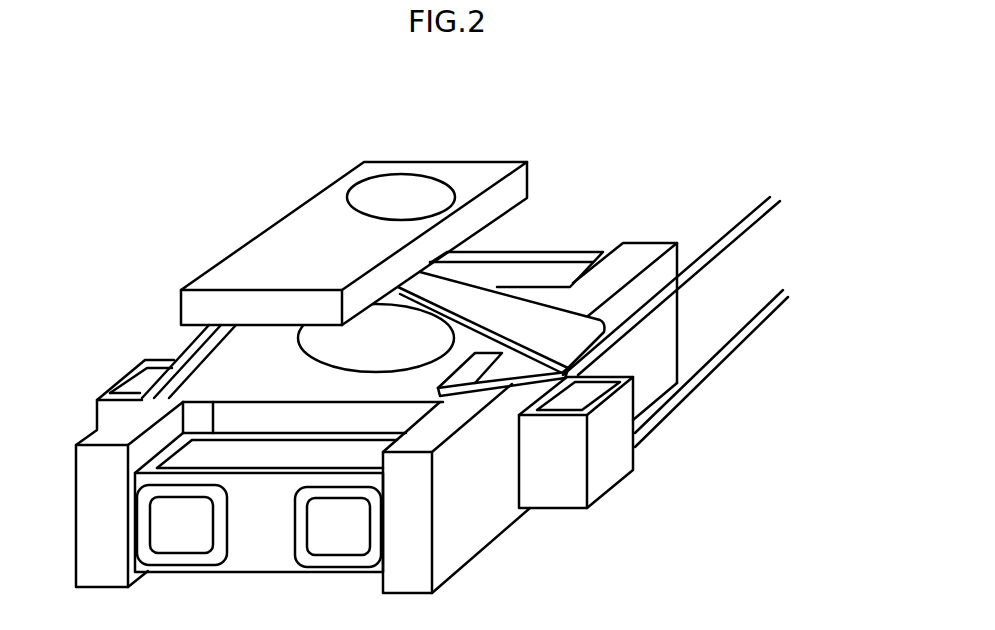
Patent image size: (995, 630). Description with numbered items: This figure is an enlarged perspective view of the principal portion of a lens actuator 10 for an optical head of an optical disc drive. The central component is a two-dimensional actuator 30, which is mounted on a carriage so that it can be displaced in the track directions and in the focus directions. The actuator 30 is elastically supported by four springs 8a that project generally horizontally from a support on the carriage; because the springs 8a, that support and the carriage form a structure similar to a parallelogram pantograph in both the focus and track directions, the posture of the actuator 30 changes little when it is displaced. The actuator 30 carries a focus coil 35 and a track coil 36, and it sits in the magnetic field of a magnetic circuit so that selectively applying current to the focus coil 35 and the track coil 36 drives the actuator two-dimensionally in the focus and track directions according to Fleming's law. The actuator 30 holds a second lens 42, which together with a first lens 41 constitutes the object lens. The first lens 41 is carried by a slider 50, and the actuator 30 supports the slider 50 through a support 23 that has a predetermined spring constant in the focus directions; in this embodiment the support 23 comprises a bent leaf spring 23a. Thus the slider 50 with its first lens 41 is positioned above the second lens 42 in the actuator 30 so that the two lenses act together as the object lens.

The lens actuator 10 is at (574, 543).
The two-dimensional actuator 30 is at (223, 377).
The focus coil 35 is at (272, 562).
The track coil 36 is at (315, 523).
The second lens 42 is at (333, 347).
The support 23 is at (489, 307).
The bent leaf spring 23a is at (512, 320).
The springs 8a is at (184, 340).
The slider 50 is at (487, 173).
The first lens 41 is at (417, 187).